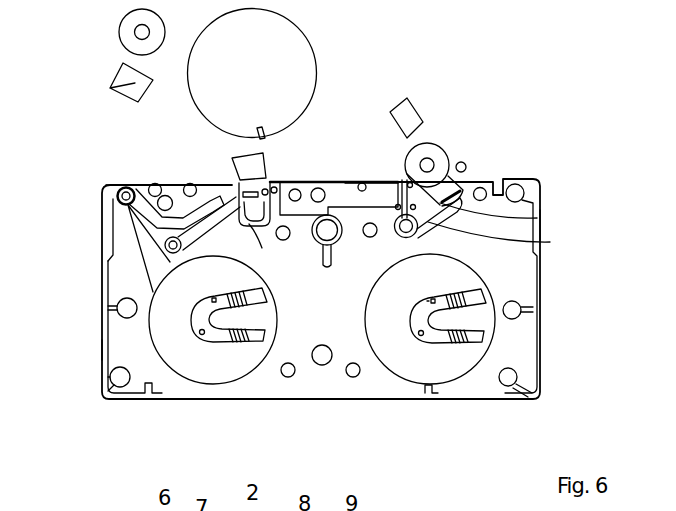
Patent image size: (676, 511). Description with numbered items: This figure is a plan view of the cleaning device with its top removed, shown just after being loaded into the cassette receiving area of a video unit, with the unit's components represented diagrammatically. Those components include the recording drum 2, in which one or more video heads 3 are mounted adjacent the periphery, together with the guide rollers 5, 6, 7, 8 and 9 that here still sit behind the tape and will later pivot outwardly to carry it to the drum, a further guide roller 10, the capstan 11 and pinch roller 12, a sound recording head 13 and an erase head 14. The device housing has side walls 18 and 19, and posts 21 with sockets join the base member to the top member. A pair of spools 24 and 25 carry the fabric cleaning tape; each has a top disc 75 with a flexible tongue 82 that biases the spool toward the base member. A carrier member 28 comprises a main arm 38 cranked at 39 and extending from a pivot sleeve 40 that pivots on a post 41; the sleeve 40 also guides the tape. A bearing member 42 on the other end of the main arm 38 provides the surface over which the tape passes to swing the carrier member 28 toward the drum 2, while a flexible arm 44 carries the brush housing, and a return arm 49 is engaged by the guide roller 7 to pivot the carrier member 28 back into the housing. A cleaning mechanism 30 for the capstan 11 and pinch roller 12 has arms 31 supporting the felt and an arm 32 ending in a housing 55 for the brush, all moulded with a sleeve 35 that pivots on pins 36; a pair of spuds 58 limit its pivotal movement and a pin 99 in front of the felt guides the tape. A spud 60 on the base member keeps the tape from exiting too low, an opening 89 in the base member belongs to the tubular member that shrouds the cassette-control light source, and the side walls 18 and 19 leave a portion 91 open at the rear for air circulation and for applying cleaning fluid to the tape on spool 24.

The recording drum 2 is at (292, 75).
The video head 3 is at (262, 125).
The guide roller 5 is at (147, 180).
The guide roller 6 is at (160, 196).
The guide roller 7 is at (182, 182).
The guide roller 8 is at (318, 188).
The guide roller 9 is at (360, 183).
The guide roller 10 is at (467, 167).
The capstan 11 is at (443, 177).
The pinch roller 12 is at (428, 150).
The sound recording head 13 is at (405, 118).
The erase head 14 is at (110, 88).
The side wall 18 is at (540, 300).
The side wall 19 is at (102, 347).
The post 21 is at (520, 196).
The spool 24 is at (180, 347).
The spool 25 is at (445, 368).
The carrier member 28 is at (152, 224).
The cleaning mechanism 30 is at (356, 257).
The arm 31 is at (392, 219).
The arm 32 is at (499, 228).
The sleeve 35 is at (420, 248).
The pin 36 is at (424, 292).
The main arm 38 is at (108, 258).
The crank 39 is at (153, 232).
The pivot sleeve 40 is at (118, 184).
The post 41 is at (117, 199).
The bearing member 42 is at (253, 247).
The flexible arm 44 is at (183, 254).
The return arm 49 is at (210, 184).
The housing 55 is at (540, 216).
The spud 58 is at (395, 207).
The spud 60 is at (295, 189).
The top disc 75 is at (217, 377).
The flexible tongue 82 is at (195, 343).
The opening 89 is at (331, 206).
The open portion 91 is at (395, 390).
The pin 99 is at (404, 178).